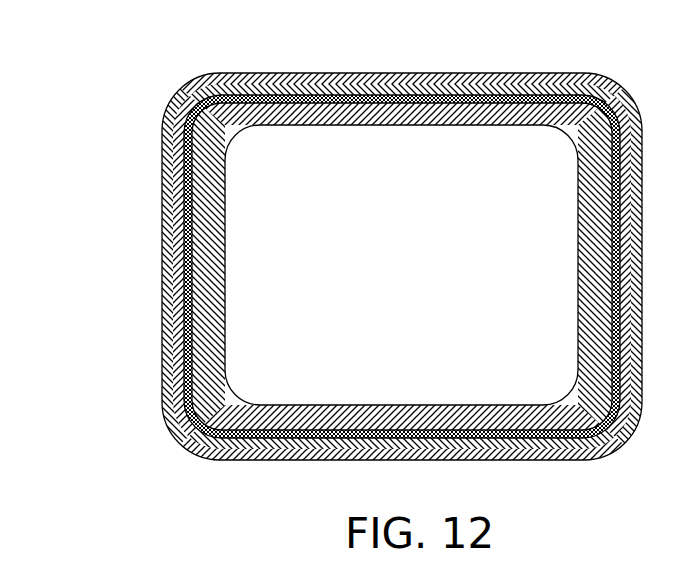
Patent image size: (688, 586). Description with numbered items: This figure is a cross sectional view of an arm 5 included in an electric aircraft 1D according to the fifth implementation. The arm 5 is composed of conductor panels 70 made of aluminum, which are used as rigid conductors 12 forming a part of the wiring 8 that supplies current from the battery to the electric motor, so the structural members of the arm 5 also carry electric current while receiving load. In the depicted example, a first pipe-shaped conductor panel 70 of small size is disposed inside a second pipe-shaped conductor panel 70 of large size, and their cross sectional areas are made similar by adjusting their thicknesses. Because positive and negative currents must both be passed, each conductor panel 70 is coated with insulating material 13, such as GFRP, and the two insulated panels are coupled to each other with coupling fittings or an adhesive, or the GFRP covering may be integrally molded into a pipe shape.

The electric aircraft 1D is at (121, 122).
The arm 5 is at (538, 72).
The conductor panel 70 is at (360, 87).
The wiring 8 is at (579, 271).
The rigid conductor 12 is at (326, 411).
The insulating material 13 is at (415, 404).